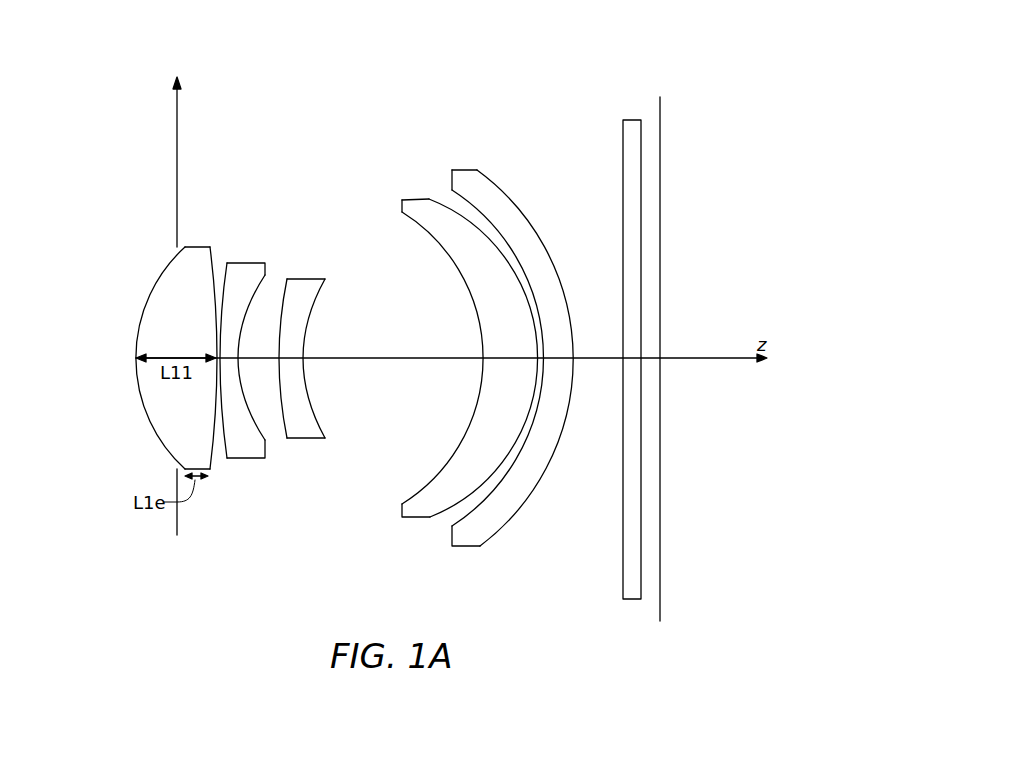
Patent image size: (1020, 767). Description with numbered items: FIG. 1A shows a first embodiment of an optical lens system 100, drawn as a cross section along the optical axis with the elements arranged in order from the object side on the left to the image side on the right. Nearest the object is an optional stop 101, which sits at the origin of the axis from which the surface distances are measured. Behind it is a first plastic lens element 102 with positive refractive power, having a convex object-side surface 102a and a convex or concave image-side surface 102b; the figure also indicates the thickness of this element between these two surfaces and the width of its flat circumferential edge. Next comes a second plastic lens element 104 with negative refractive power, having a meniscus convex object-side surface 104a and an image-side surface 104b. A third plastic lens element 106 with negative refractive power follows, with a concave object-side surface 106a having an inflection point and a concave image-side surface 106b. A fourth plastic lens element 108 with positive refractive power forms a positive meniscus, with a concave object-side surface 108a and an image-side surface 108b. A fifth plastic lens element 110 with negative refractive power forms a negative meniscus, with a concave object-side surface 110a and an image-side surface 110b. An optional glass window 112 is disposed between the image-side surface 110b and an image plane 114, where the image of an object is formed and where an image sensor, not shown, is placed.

The optical lens system 100 is at (722, 75).
The stop 101 is at (177, 188).
The first plastic lens element 102 is at (159, 375).
The object-side surface of first lens element 102a is at (140, 396).
The image-side surface of first lens element 102b is at (211, 471).
The second plastic lens element 104 is at (281, 365).
The object-side surface of second lens element 104a is at (229, 460).
The image-side surface of second lens element 104b is at (255, 428).
The third plastic lens element 106 is at (337, 323).
The object-side surface of third lens element 106a is at (278, 302).
The image-side surface of third lens element 106b is at (308, 392).
The fourth plastic lens element 108 is at (435, 354).
The object-side surface of fourth lens element 108a is at (442, 254).
The image-side surface of fourth lens element 108b is at (478, 484).
The fifth plastic lens element 110 is at (507, 324).
The object-side surface of fifth lens element 110a is at (467, 222).
The image-side surface of fifth lens element 110b is at (528, 497).
The glass window 112 is at (623, 157).
The image plane 114 is at (660, 160).